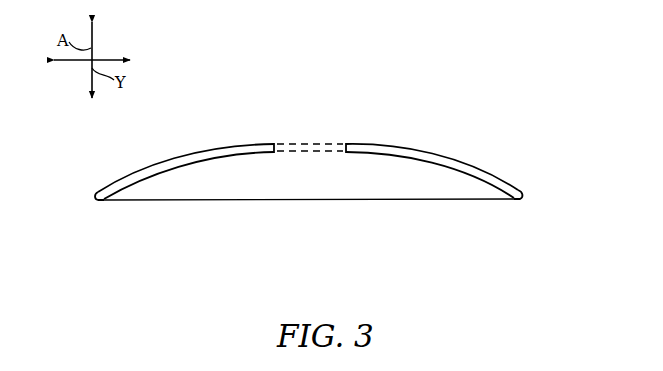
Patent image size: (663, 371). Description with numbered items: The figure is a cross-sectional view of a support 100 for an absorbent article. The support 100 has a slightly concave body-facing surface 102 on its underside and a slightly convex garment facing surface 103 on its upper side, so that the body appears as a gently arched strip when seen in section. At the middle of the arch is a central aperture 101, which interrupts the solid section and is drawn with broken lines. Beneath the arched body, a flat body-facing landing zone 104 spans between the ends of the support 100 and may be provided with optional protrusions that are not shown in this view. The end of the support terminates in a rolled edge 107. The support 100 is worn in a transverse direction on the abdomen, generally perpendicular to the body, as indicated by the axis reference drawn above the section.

The support 100 is at (286, 173).
The central aperture 101 is at (273, 146).
The body-facing surface 102 is at (198, 164).
The garment facing surface 103 is at (183, 150).
The flat body-facing landing zone 104 is at (102, 200).
The rolled edge 107 is at (97, 193).